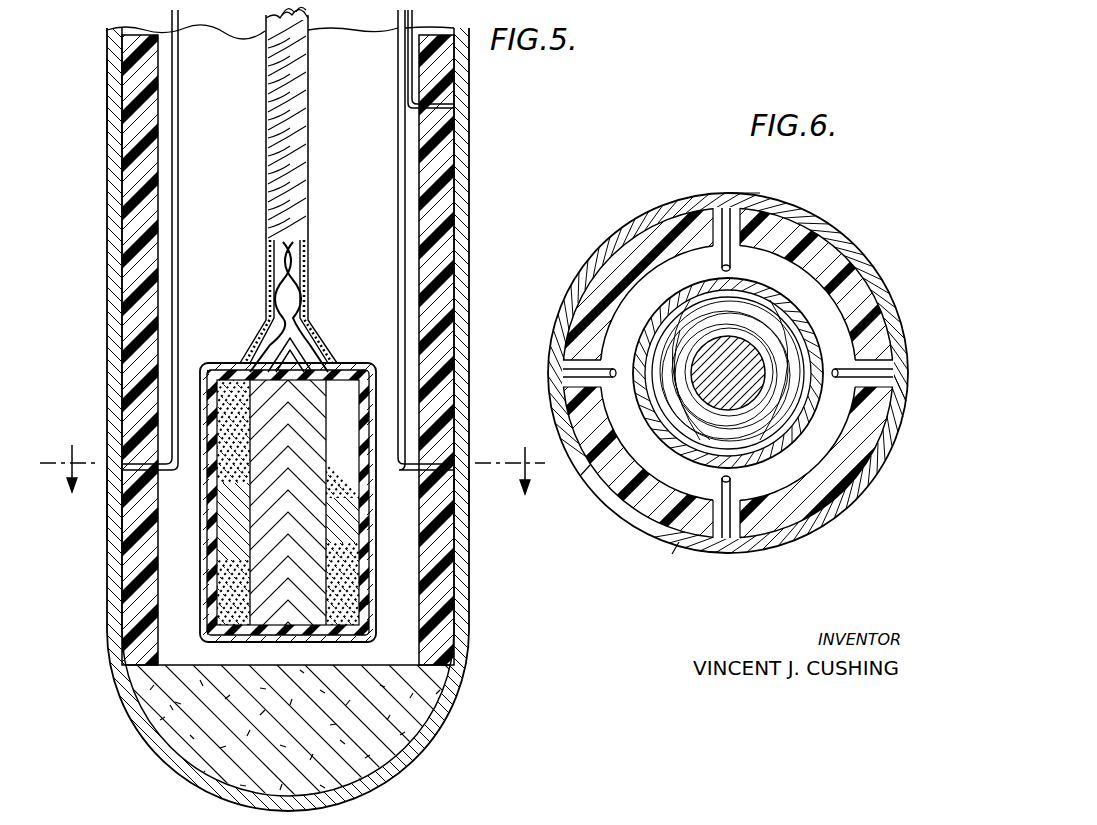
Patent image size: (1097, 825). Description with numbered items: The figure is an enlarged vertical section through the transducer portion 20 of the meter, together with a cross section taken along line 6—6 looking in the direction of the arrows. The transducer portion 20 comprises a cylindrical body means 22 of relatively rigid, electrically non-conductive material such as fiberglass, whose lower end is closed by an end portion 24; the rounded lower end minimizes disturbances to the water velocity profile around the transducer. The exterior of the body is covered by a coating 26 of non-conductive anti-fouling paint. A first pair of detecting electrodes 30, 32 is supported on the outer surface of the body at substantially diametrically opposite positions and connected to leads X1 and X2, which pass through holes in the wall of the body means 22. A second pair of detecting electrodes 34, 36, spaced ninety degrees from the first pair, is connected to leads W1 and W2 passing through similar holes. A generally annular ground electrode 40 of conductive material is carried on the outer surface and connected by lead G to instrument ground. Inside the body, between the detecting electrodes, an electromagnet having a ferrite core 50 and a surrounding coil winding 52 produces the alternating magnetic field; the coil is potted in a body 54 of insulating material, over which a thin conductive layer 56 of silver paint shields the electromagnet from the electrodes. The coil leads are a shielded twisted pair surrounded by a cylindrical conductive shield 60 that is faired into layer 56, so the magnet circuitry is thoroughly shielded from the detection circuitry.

In FIG. 5, the transducer portion 20 is at (105, 153).
In FIG. 6, the transducer portion 20 is at (880, 268).
In FIG. 5, the cylindrical body means 22 is at (440, 243).
In FIG. 6, the cylindrical body means 22 is at (810, 534).
In FIG. 5, the end portion 24 is at (375, 748).
In FIG. 5, the coating 26 is at (466, 572).
In FIG. 6, the coating 26 is at (586, 482).
In FIG. 5, the detecting electrode 30 is at (107, 498).
In FIG. 6, the detecting electrode 30 is at (553, 408).
In FIG. 5, the detecting electrode 32 is at (458, 498).
In FIG. 6, the detecting electrode 32 is at (898, 406).
In FIG. 6, the detecting electrode 34 is at (762, 198).
In FIG. 6, the detecting electrode 36 is at (712, 548).
In FIG. 5, the ground electrode 40 is at (107, 108).
In FIG. 5, the core 50 is at (300, 600).
In FIG. 6, the core 50 is at (806, 330).
In FIG. 5, the coil winding 52 is at (222, 568).
In FIG. 6, the coil winding 52 is at (690, 320).
In FIG. 5, the body of insulating material 54 is at (369, 505).
In FIG. 6, the body of insulating material 54 is at (668, 422).
In FIG. 5, the thin layer of electrically conductive material 56 is at (365, 466).
In FIG. 6, the thin layer of electrically conductive material 56 is at (798, 433).
In FIG. 5, the cylindrical shield 60 is at (310, 136).
In FIG. 5, the section line 6— 6 is at (292, 471).
In FIG. 5, the lead X1 is at (176, 20).
In FIG. 6, the lead X1 is at (615, 370).
In FIG. 5, the lead X2 is at (396, 18).
In FIG. 6, the lead X2 is at (862, 373).
In FIG. 5, the lead G is at (414, 14).
In FIG. 6, the lead W1 is at (731, 267).
In FIG. 6, the lead W2 is at (731, 480).